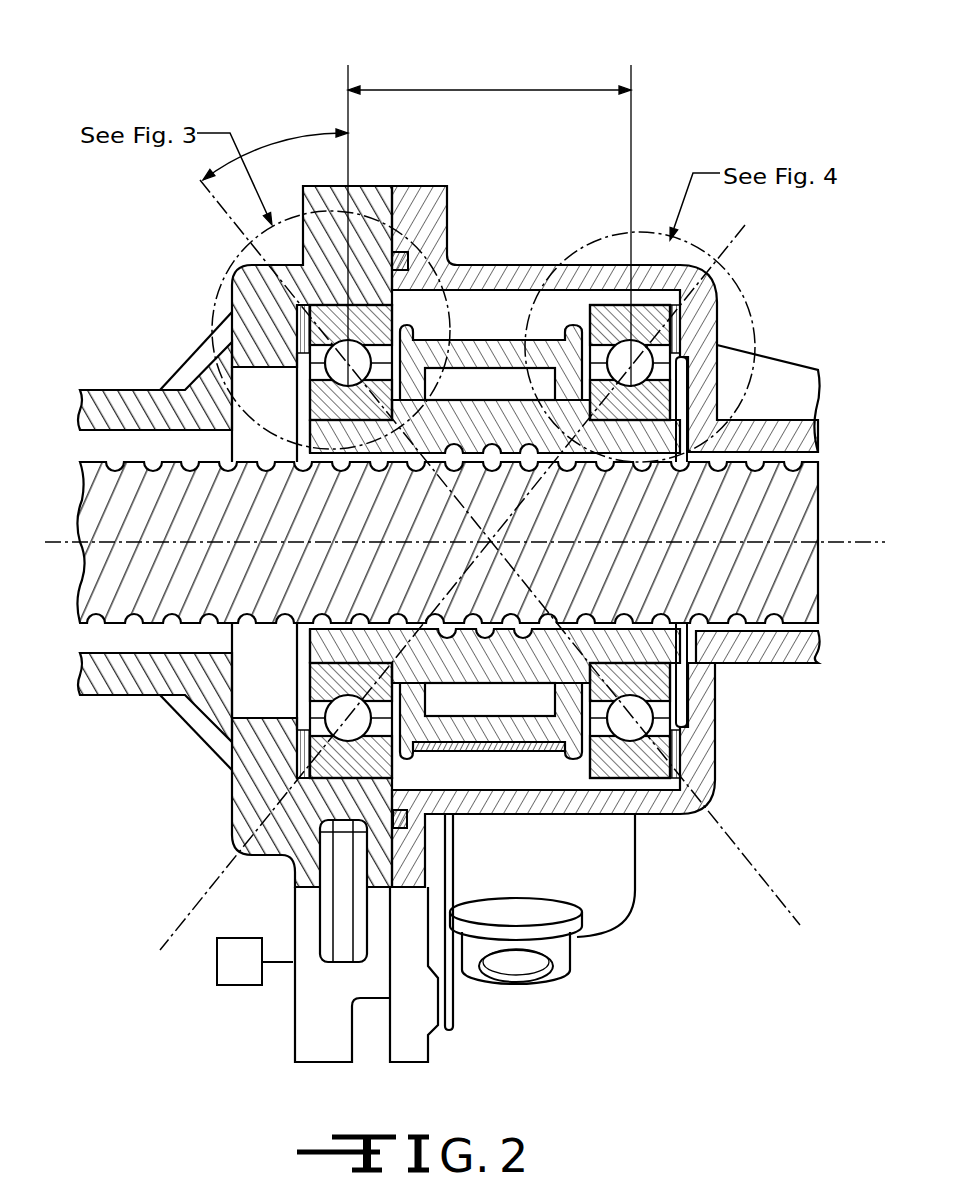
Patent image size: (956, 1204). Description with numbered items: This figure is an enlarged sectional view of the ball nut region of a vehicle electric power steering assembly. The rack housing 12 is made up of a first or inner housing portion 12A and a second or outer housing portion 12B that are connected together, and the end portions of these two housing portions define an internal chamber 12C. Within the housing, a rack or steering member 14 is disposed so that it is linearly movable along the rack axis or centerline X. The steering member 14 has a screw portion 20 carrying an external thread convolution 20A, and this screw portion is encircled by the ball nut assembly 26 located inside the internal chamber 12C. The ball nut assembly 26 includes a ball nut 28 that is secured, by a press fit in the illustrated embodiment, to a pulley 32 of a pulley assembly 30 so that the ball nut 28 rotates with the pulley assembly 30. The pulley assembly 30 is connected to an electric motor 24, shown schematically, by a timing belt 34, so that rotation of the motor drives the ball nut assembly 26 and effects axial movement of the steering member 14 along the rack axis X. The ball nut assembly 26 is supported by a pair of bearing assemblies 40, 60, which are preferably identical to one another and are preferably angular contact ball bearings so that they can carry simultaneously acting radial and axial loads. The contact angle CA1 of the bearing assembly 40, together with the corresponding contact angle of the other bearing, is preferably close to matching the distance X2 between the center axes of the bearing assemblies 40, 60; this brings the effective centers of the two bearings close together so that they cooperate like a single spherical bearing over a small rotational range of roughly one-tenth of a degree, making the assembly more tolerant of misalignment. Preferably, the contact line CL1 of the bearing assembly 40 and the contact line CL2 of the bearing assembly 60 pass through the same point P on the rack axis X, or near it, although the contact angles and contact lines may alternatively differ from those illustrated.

The rack housing 12 is at (124, 378).
The first housing portion 12A is at (123, 668).
The second housing portion 12B is at (777, 648).
The internal chamber 12C is at (543, 770).
The steering member 14 is at (70, 629).
The screw portion 20 is at (808, 540).
The external thread convolution 20A is at (762, 470).
The electric motor 24 is at (238, 986).
The ball nut assembly 26 is at (503, 615).
The ball nut 28 is at (697, 670).
The pulley assembly 30 is at (472, 326).
The pulley 32 is at (500, 357).
The timing belt 34 is at (507, 773).
The bearing assembly 40 is at (291, 683).
The bearing assembly 60 is at (719, 400).
The rack axis X is at (58, 540).
The distance between bearing center axes X2 is at (455, 88).
The contact angle CA1 is at (258, 143).
The contact line CL1 is at (450, 492).
The contact line CL2 is at (542, 470).
The point P is at (489, 543).